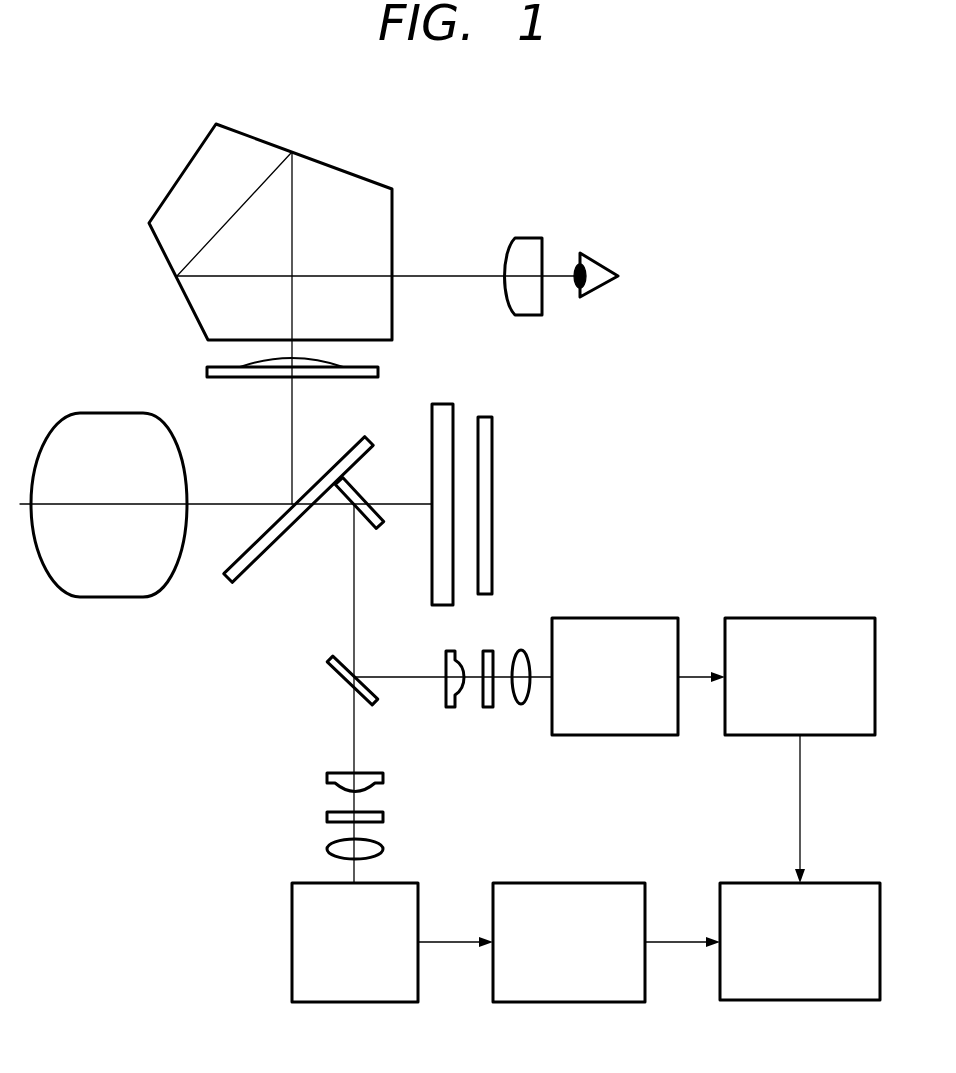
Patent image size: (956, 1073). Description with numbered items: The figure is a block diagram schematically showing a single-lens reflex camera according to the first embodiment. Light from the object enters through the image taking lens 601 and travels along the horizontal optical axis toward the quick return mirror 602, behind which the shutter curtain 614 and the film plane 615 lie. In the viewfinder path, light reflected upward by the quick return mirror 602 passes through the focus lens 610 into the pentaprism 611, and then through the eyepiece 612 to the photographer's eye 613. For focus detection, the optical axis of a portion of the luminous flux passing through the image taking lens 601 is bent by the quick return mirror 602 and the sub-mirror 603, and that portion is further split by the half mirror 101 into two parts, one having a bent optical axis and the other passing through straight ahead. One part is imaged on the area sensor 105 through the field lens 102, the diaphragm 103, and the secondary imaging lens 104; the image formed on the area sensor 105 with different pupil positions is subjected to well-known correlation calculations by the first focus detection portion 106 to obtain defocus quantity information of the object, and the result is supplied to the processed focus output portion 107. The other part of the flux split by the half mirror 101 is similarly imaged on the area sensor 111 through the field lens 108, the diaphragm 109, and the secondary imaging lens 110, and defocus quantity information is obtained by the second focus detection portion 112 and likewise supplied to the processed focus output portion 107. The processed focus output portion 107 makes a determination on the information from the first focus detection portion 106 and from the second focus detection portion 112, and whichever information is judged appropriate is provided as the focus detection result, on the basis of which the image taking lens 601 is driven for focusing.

The half mirror 101 is at (333, 663).
The field lens 102 is at (452, 708).
The diaphragm 103 is at (488, 708).
The secondary imaging lens 104 is at (520, 707).
The area sensor 105 is at (650, 617).
The first focus detection portion 106 is at (812, 617).
The processed focus output portion 107 is at (838, 882).
The field lens 108 is at (327, 778).
The diaphragm 109 is at (327, 817).
The secondary imaging lens 110 is at (327, 850).
The area sensor 111 is at (388, 883).
The second focus detection portion 112 is at (607, 882).
The image taking lens 601 is at (122, 413).
The quick return mirror 602 is at (367, 440).
The sub-mirror 603 is at (355, 487).
The focus lens 610 is at (245, 380).
The pentaprism 611 is at (338, 168).
The eyepiece 612 is at (528, 234).
The photographer's eye 613 is at (603, 262).
The shutter curtain 614 is at (446, 403).
The film plane 615 is at (493, 440).